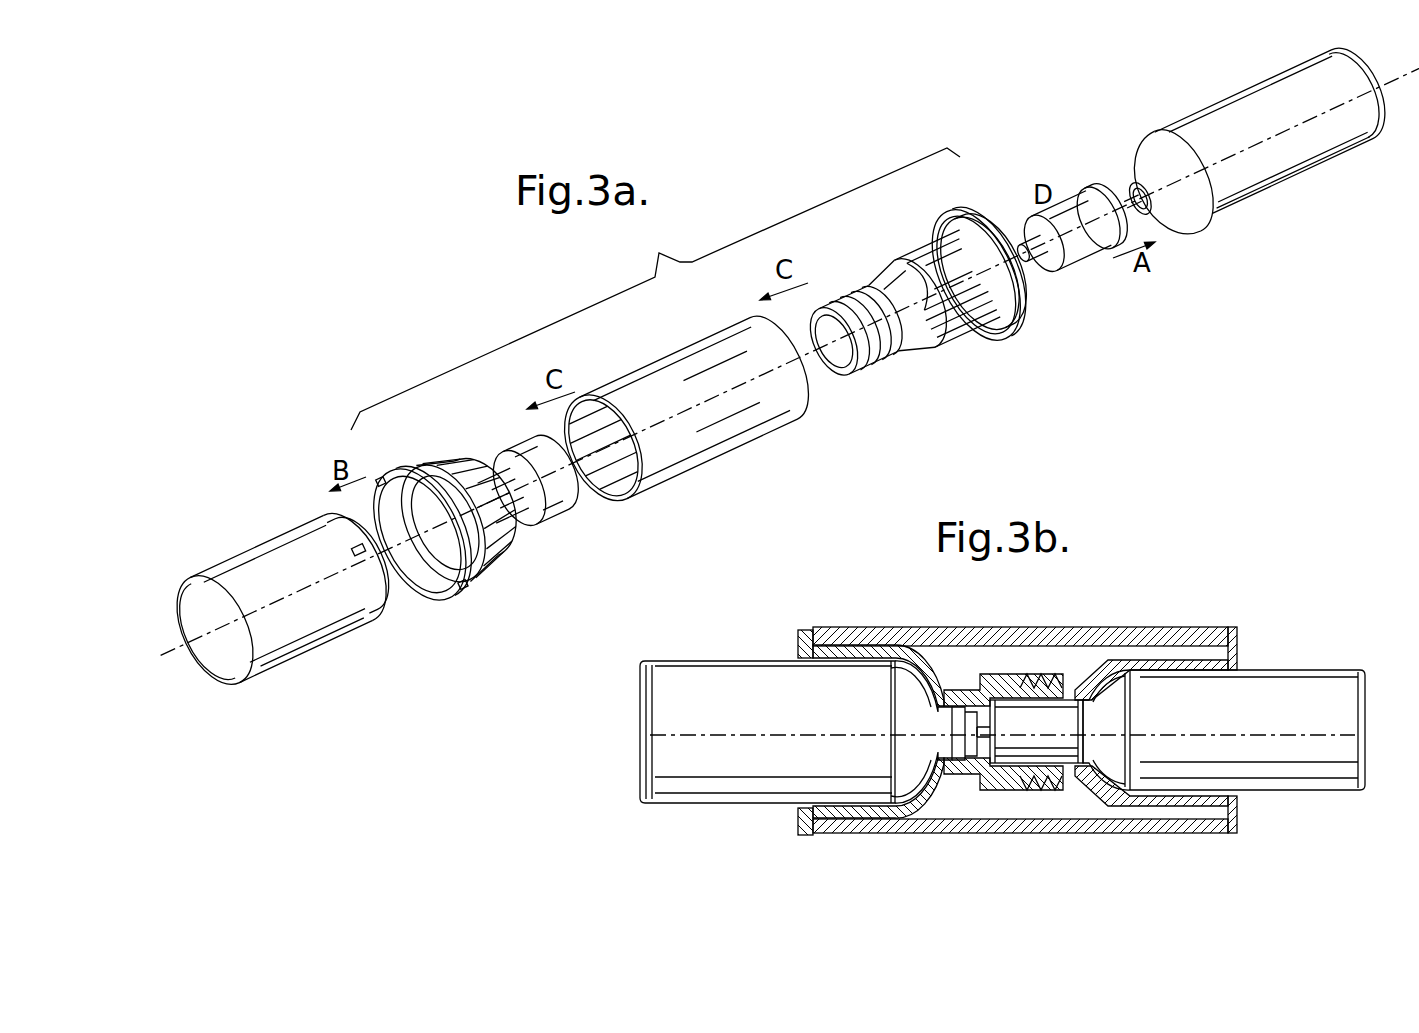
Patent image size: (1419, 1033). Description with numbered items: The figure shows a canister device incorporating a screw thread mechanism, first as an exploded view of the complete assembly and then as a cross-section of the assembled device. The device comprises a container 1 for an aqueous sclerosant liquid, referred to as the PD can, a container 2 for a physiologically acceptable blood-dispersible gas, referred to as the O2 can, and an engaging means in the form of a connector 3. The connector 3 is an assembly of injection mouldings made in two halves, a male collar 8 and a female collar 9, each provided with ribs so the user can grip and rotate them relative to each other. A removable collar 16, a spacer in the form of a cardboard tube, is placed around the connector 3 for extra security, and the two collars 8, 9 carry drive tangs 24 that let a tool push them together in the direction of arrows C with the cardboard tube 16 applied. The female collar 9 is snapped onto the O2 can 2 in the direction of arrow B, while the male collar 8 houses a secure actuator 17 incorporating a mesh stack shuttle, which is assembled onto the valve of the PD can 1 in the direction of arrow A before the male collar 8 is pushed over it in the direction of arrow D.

In FIG. 3A, the container for aqueous sclerosant liquid 1 is at (1262, 106).
In FIG. 3B, the container for aqueous sclerosant liquid 1 is at (1302, 690).
In FIG. 3A, the container for physiologically acceptable blood-dispersible gas 2 is at (203, 608).
In FIG. 3B, the container for physiologically acceptable blood-dispersible gas 2 is at (708, 682).
In FIG. 3A, the connector 3 is at (655, 289).
In FIG. 3A, the male collar 8 is at (921, 272).
In FIG. 3B, the male collar 8 is at (1170, 660).
In FIG. 3A, the female collar 9 is at (493, 472).
In FIG. 3B, the female collar 9 is at (932, 636).
In FIG. 3A, the removable collar 16 is at (686, 380).
In FIG. 3B, the removable collar 16 is at (1003, 626).
In FIG. 3A, the secure actuator 17 is at (1075, 240).
In FIG. 3B, the secure actuator 17 is at (1070, 715).
In FIG. 3A, the drive tangs 24 is at (445, 600).